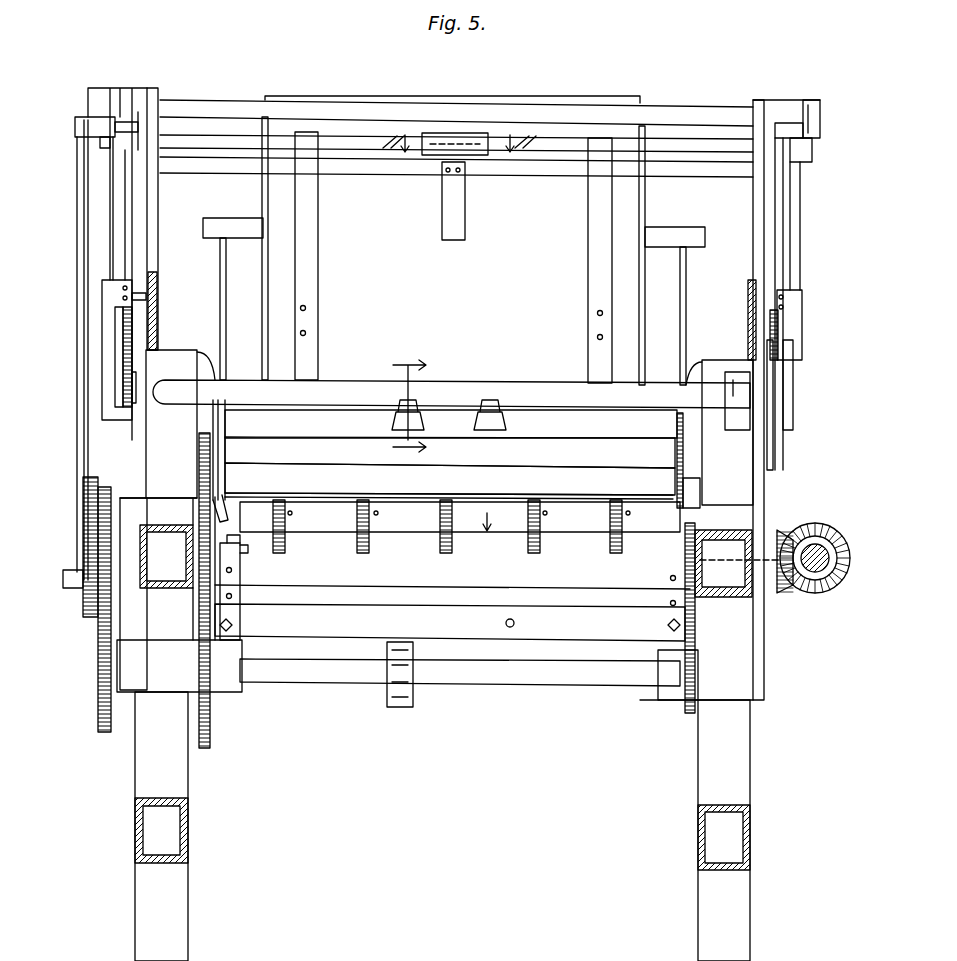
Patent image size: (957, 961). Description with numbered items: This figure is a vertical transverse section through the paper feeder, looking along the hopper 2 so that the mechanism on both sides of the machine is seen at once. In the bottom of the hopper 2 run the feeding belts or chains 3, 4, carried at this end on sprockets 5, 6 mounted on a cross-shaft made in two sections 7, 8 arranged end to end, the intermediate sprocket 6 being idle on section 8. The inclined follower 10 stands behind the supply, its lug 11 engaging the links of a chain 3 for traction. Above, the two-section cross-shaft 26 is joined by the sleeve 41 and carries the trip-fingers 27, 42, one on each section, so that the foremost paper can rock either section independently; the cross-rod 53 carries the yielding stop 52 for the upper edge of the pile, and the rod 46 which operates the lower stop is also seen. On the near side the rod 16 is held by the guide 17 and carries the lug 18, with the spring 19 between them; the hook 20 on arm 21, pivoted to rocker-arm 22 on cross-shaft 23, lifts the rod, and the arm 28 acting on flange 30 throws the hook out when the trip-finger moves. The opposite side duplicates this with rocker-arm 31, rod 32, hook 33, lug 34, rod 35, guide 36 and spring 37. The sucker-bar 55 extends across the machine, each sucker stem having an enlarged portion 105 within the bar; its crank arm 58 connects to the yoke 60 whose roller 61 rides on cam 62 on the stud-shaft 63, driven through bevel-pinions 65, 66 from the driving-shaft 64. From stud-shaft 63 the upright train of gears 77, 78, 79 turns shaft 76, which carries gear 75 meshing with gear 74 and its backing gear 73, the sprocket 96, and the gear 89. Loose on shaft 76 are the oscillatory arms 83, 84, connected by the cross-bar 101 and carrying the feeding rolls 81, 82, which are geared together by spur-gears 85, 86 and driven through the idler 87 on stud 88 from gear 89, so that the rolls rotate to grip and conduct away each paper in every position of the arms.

The hopper 2 is at (268, 316).
The feeding belt or chain 3 is at (285, 523).
The feeding belt or chain 4 is at (453, 540).
The sprocket 5 is at (279, 548).
The sprocket 6 is at (446, 548).
The shaft section 7 is at (323, 540).
The shaft section 8 is at (590, 520).
The follower 10 is at (524, 215).
The lug 11 is at (464, 145).
The rod 16 is at (123, 443).
The guide 17 is at (224, 232).
The tooth or lug 18 is at (132, 385).
The spring 19 is at (115, 360).
The hook 20 is at (123, 421).
The arm 21 is at (127, 258).
The rocker-arm 22 is at (102, 105).
The cross-shaft 23 is at (560, 114).
The cross-shaft 26 is at (358, 140).
The trip-finger 27 is at (318, 247).
The arm 28 is at (112, 160).
The flange 30 is at (105, 314).
The rocker-arm 31 is at (812, 118).
The rod or arm 32 is at (783, 184).
The hook 33 is at (780, 423).
The lug or hook 34 is at (782, 397).
The rod 35 is at (778, 440).
The guide 36 is at (782, 295).
The spring 37 is at (785, 338).
The sleeve 41 is at (456, 138).
The trip-finger 42 is at (595, 251).
The rod 46 is at (688, 487).
The yielding stop 52 is at (455, 238).
The cross-rod 53 is at (420, 172).
The sucker-bar 55 is at (490, 400).
The crank arm 58 is at (745, 382).
The yoke 60 is at (780, 528).
The anti-friction roller 61 is at (778, 475).
The cam 62 is at (790, 545).
The stud-shaft 63 is at (765, 525).
The driving-shaft 64 is at (815, 565).
The bevel-pinion 65 is at (830, 590).
The bevel-pinion 66 is at (794, 585).
The gear 73 is at (96, 590).
The gear 74 is at (88, 547).
The gear 75 is at (96, 660).
The shaft 76 is at (570, 685).
The gear 77 is at (690, 525).
The gear 78 is at (680, 603).
The gear 79 is at (683, 712).
The feeding roll 81 is at (818, 432).
The feeding roll 82 is at (450, 479).
The oscillatory arm 83 is at (688, 460).
The oscillatory arm 84 is at (228, 506).
The spur-gear 85 is at (200, 435).
The spur-gear 86 is at (200, 470).
The idler 87 is at (199, 513).
The stud 88 is at (246, 546).
The gear 89 is at (206, 748).
The sprocket 96 is at (396, 707).
The cross-bar 101 is at (450, 622).
The enlarged portion 105 is at (395, 423).